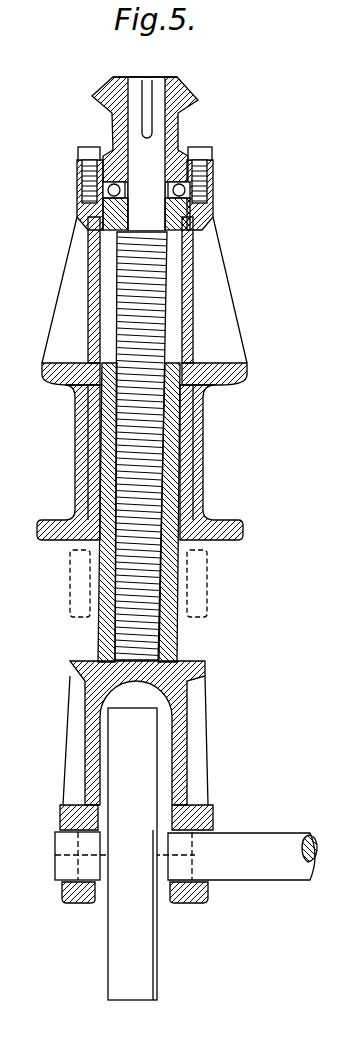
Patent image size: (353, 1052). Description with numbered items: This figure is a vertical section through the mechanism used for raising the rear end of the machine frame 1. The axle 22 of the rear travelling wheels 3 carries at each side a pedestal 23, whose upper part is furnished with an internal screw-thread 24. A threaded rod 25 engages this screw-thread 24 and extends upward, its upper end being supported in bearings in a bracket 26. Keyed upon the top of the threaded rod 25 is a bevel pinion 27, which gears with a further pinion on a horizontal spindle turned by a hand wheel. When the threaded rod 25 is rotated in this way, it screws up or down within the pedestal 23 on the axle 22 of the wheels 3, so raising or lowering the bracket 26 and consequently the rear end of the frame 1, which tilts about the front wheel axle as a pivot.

The bevel pinion 27 is at (191, 104).
The bracket 26 is at (77, 243).
The threaded rod 25 is at (168, 311).
The frame 1 is at (75, 460).
The internal screw-thread 24 is at (177, 580).
The pedestal 23 is at (177, 648).
The axle 22 is at (269, 872).
The rear travelling wheels 3 is at (148, 942).